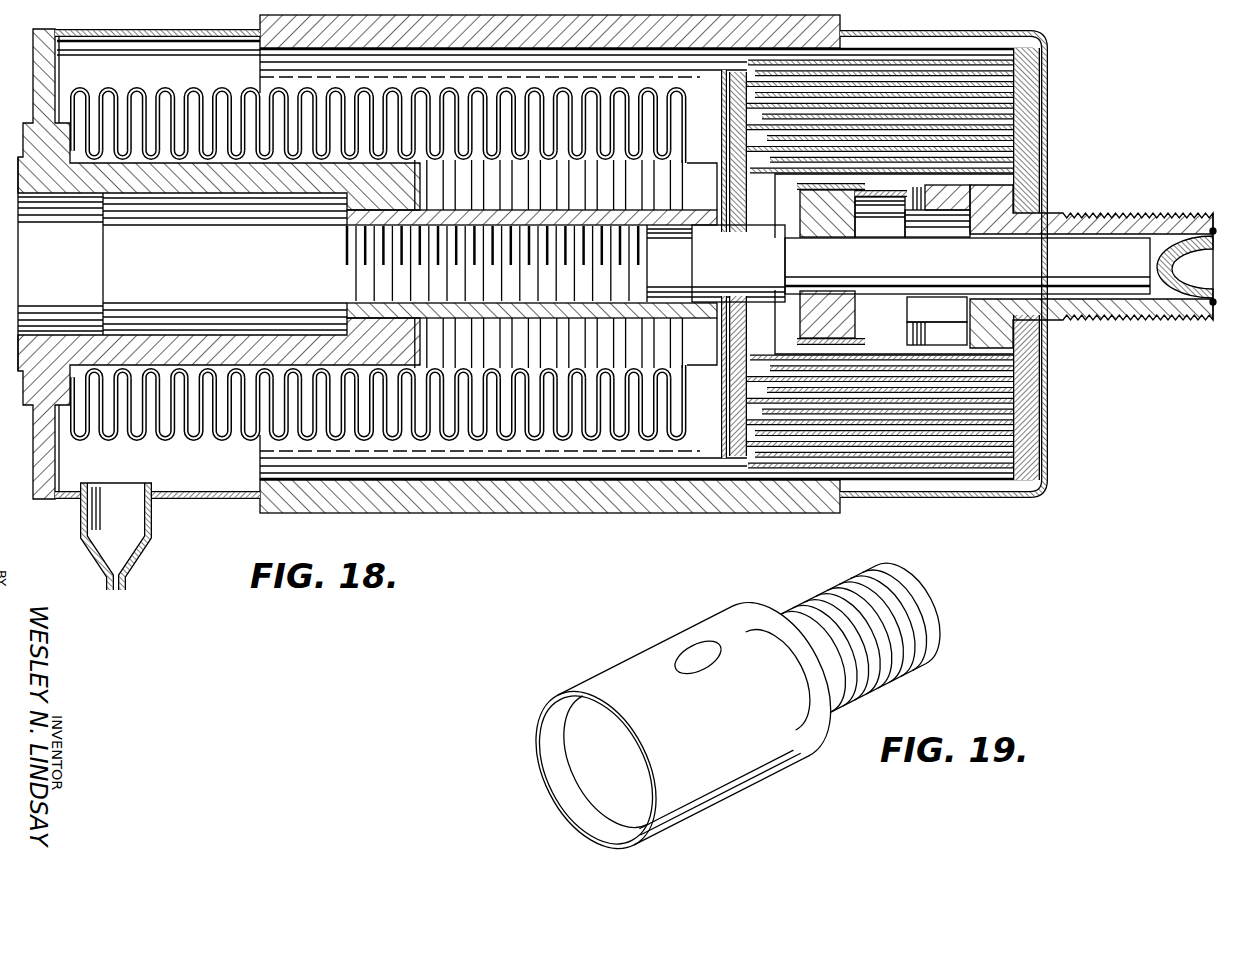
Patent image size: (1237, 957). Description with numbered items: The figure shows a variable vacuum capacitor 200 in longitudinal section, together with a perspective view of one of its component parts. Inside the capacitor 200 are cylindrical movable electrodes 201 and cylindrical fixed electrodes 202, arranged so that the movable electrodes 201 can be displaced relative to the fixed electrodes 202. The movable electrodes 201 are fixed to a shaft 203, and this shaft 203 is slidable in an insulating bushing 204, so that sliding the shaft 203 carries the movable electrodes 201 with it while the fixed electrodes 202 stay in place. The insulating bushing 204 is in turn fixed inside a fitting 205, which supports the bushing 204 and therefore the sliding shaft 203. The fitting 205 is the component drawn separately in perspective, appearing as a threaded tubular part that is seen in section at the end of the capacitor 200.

In FIG. 18, the variable vacuum capacitor 200 is at (503, 520).
In FIG. 18, the movable electrodes 201 is at (737, 474).
In FIG. 18, the fixed electrodes 202 is at (1030, 77).
In FIG. 18, the shaft 203 is at (738, 263).
In FIG. 18, the insulating bushing 204 is at (848, 313).
In FIG. 18, the fitting 205 is at (1056, 212).
In FIG. 19, the fitting 205 is at (702, 627).